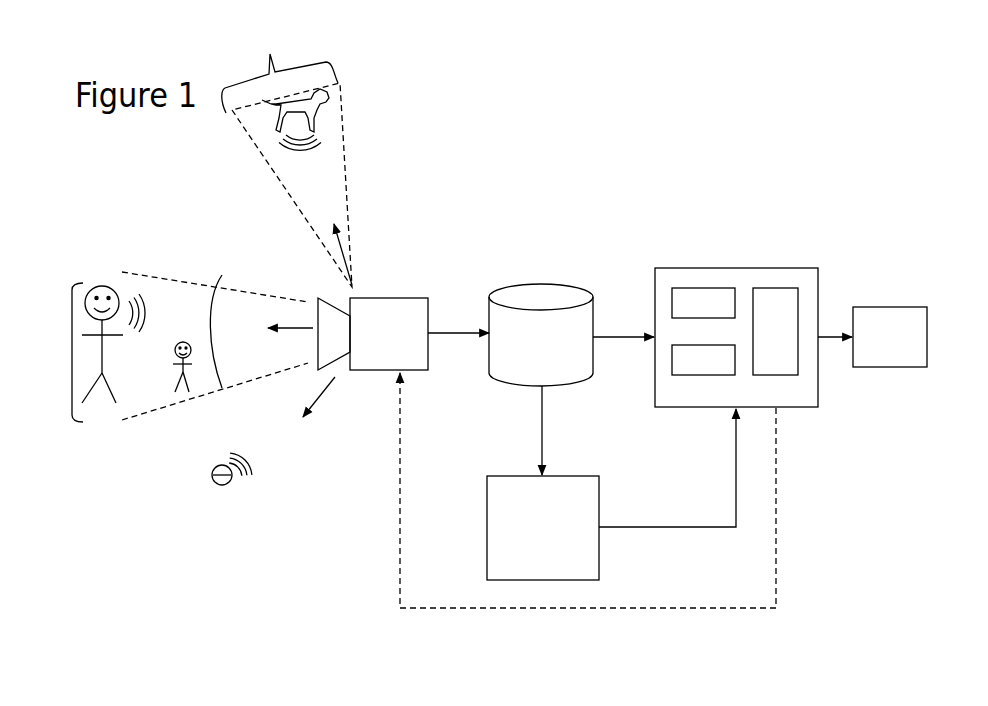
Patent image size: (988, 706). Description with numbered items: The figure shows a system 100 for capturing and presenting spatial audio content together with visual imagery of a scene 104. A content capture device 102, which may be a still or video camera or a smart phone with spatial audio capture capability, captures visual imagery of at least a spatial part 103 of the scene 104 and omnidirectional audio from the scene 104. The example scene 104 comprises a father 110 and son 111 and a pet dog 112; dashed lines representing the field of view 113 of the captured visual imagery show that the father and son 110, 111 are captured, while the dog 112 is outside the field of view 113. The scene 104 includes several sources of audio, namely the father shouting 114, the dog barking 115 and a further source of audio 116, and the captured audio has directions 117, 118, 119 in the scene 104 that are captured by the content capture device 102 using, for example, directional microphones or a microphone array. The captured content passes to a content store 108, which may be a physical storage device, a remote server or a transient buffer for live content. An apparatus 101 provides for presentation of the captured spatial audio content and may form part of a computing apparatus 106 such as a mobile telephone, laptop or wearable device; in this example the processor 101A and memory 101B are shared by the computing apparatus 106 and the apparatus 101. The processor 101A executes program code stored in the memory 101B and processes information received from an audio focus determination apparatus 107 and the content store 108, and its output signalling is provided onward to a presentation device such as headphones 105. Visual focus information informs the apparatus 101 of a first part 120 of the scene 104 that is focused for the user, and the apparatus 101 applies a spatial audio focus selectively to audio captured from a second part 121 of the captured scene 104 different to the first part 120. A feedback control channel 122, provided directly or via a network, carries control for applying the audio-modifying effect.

The system 100 is at (597, 191).
The apparatus 101 is at (777, 307).
The processor 101A is at (718, 298).
The memory 101B is at (693, 360).
The content capture device 102 is at (403, 334).
The spatial part of the scene 103 is at (250, 363).
The scene 104 is at (218, 530).
The headphones 105 is at (872, 337).
The computing apparatus 106 is at (705, 268).
The audio focus determination apparatus 107 is at (611, 494).
The content store 108 is at (571, 379).
The father 110 is at (98, 285).
The son 111 is at (172, 364).
The pet dog 112 is at (303, 110).
The field of view 113 is at (240, 289).
The father shouting 114 is at (140, 293).
The dog barking 115 is at (310, 150).
The further source of audio 116 is at (233, 479).
The direction 117 is at (290, 327).
The direction 118 is at (347, 243).
The direction 119 is at (330, 395).
The first part of the scene 120 is at (72, 350).
The second part of the captured scene 121 is at (287, 157).
The feedback control channel 122 is at (603, 610).